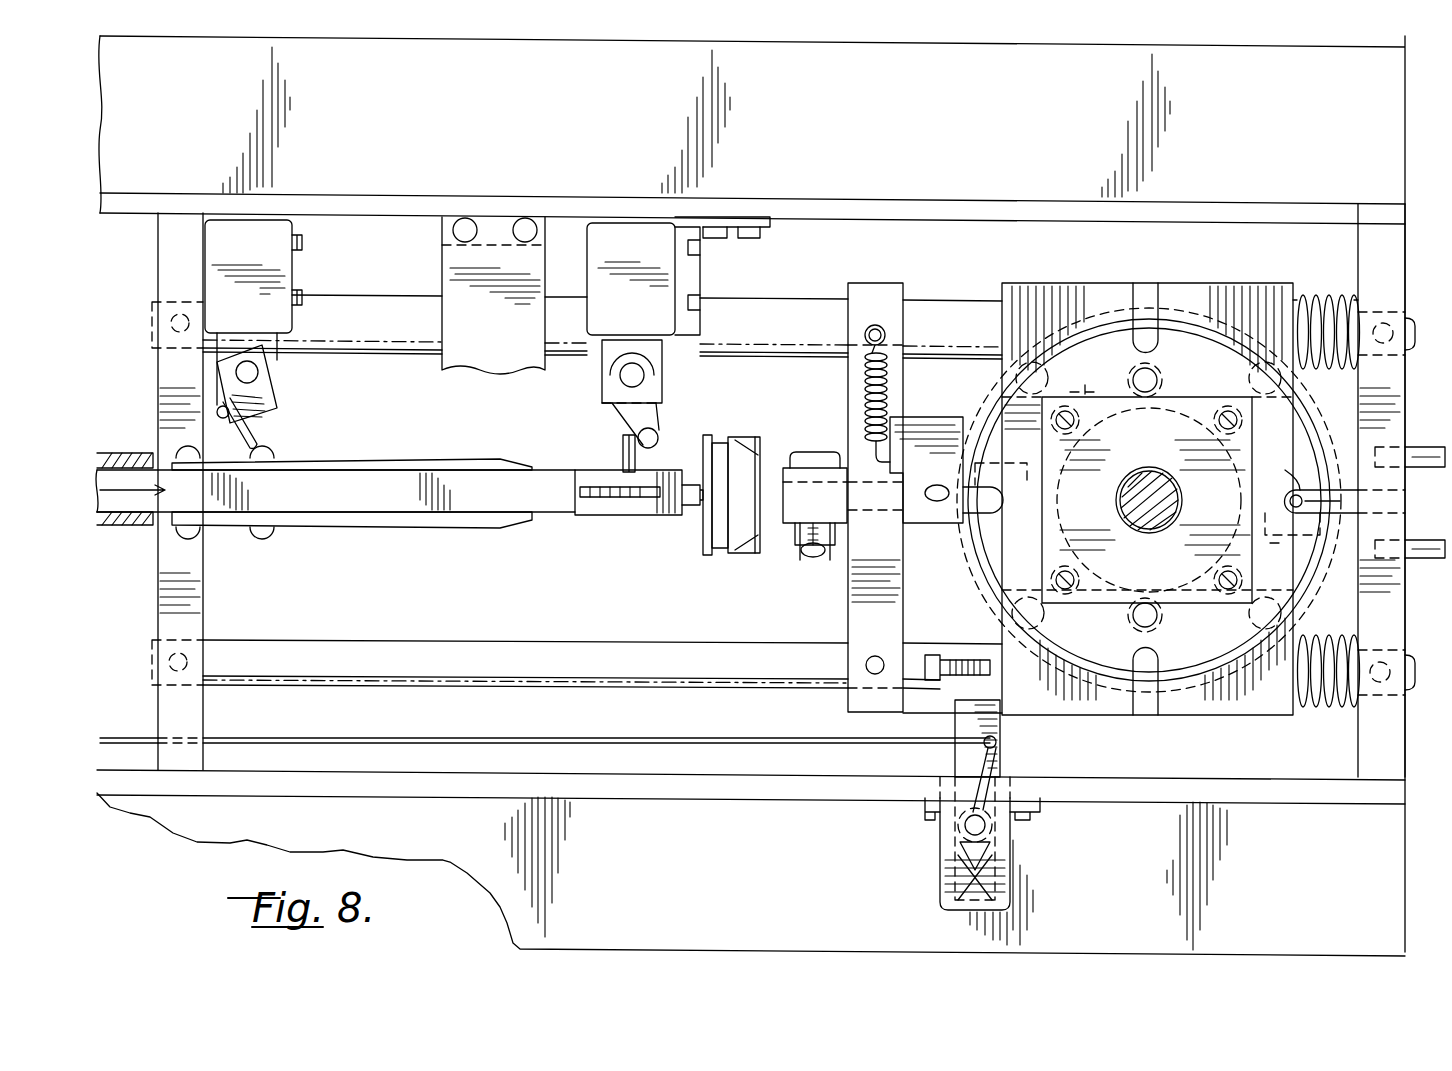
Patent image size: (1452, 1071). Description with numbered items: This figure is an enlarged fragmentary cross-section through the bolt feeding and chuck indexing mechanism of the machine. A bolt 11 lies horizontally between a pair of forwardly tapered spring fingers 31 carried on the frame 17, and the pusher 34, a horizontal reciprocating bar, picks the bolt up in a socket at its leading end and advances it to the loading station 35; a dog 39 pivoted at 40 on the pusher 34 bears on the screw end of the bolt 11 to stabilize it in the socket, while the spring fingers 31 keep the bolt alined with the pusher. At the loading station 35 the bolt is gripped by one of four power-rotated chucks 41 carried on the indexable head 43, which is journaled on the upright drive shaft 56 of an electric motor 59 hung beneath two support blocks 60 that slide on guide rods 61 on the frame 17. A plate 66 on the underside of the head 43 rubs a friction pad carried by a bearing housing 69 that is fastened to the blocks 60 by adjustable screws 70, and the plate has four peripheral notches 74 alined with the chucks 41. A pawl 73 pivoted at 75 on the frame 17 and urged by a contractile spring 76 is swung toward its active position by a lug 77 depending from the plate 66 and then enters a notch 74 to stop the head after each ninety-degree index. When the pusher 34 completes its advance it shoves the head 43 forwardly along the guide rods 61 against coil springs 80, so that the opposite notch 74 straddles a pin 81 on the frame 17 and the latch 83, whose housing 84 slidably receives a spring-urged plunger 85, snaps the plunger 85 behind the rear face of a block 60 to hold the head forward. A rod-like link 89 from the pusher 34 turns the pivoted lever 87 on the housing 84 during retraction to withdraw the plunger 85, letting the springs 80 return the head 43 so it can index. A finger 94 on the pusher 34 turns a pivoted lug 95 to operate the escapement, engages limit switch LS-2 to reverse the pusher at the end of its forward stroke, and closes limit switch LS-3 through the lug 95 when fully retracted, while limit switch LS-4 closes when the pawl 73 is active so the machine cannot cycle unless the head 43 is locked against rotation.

The bolt 11 is at (697, 460).
The frame 17 is at (878, 222).
The spring fingers 31 is at (495, 458).
The pusher 34 is at (565, 512).
The loading station 35 is at (694, 531).
The dog 39 is at (625, 497).
The pivot 40 is at (578, 517).
The chuck 41 is at (753, 432).
The indexable head 43 is at (1195, 655).
The drive shaft 56 is at (1125, 515).
The electric motor 59 is at (985, 595).
The support block 60 is at (1033, 290).
The guide rods 61 is at (948, 318).
The plate 66 is at (985, 558).
The bearing housing 69 is at (1100, 395).
The screws 70 is at (1165, 428).
The pawl 73 is at (945, 417).
The notch 74 is at (1152, 322).
The pawl pivot 75 is at (872, 515).
The contractile spring 76 is at (868, 390).
The lug 77 is at (1215, 310).
The coil springs 80 is at (1335, 295).
The pin 81 is at (1300, 478).
The latch 83 is at (936, 767).
The latch housing 84 is at (1005, 860).
The plunger 85 is at (958, 725).
The lever 87 is at (1000, 745).
The link 89 is at (808, 740).
The finger 94 is at (622, 448).
The pivoted lug 95 is at (262, 428).
The limit switch LS-2 is at (668, 300).
The limit switch LS-3 is at (290, 280).
The limit switch LS-4 is at (800, 550).